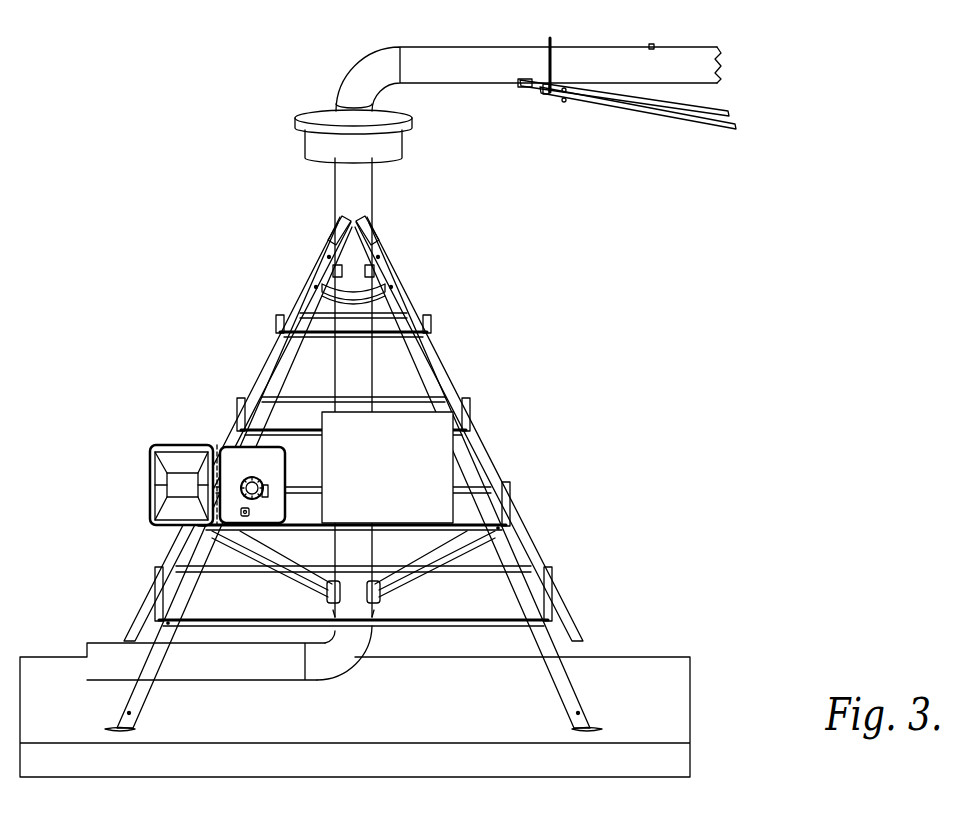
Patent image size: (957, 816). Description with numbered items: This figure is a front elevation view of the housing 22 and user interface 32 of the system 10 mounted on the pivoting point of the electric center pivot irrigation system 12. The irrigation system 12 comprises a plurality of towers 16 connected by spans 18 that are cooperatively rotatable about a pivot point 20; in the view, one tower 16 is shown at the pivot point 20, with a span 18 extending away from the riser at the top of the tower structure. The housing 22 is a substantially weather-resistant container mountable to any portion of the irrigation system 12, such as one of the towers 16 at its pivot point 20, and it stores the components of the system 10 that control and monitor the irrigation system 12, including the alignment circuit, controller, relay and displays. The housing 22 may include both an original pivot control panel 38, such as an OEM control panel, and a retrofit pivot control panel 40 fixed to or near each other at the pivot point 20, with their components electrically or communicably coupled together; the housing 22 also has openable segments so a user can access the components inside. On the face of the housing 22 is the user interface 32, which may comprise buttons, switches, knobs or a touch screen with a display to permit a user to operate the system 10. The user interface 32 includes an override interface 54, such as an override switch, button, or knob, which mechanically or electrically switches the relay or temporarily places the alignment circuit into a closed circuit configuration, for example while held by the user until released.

The system 10 is at (202, 438).
The electric center pivot irrigation system 12 is at (279, 80).
The tower 16 is at (433, 373).
The span 18 is at (490, 78).
The pivot point 20 is at (362, 195).
The housing 22 is at (247, 455).
The user interface 32 is at (262, 482).
The original pivot control panel 38 is at (437, 457).
The retrofit pivot control panel 40 is at (183, 485).
The override interface 54 is at (245, 520).